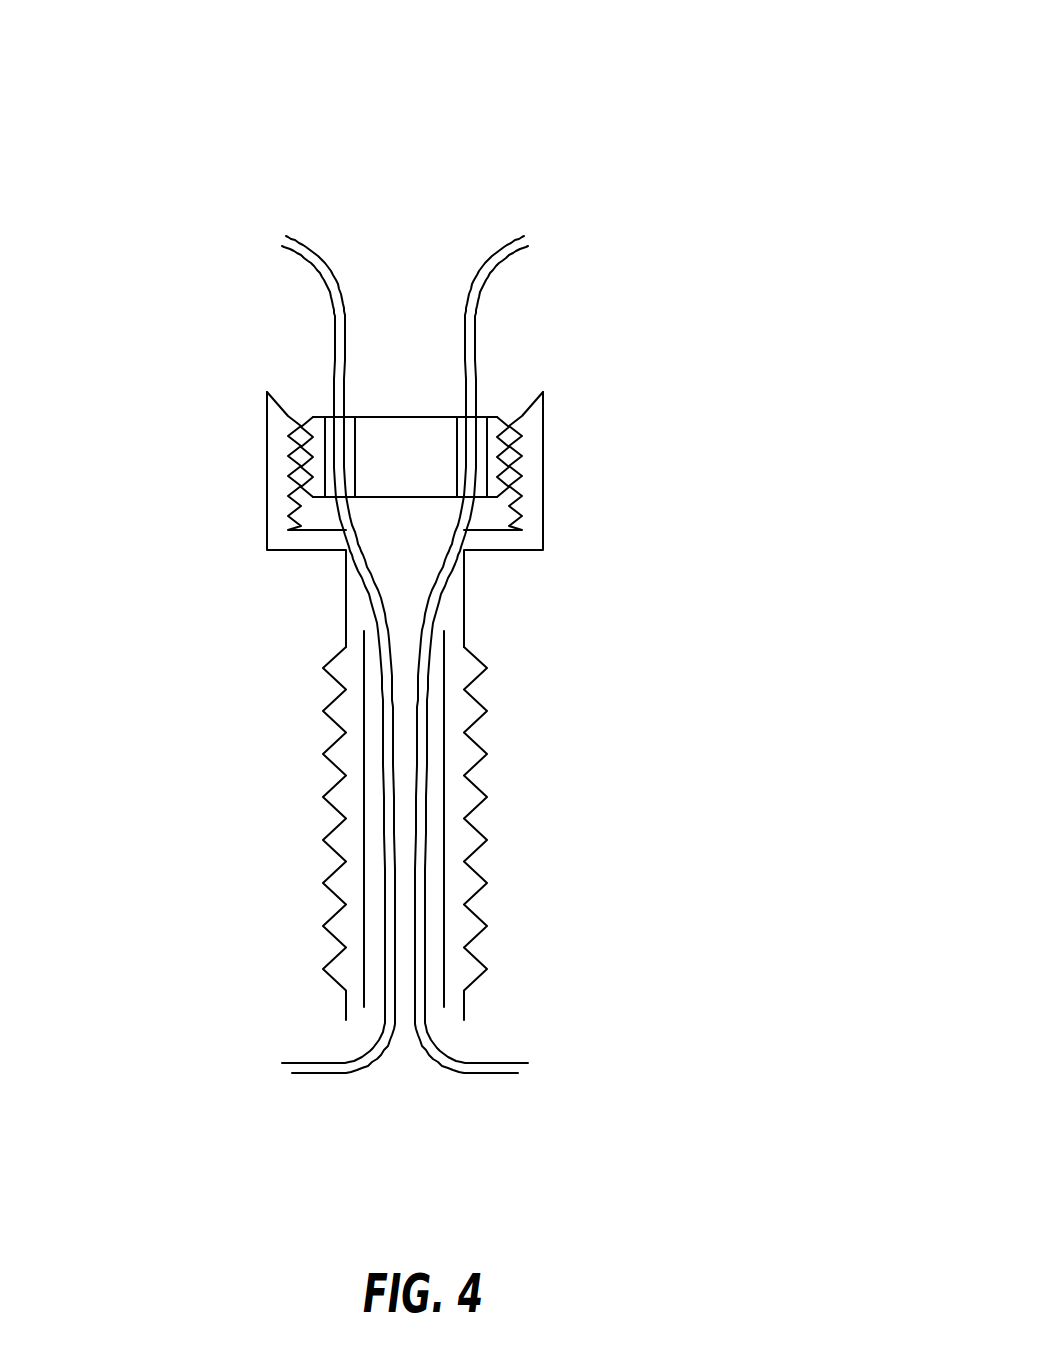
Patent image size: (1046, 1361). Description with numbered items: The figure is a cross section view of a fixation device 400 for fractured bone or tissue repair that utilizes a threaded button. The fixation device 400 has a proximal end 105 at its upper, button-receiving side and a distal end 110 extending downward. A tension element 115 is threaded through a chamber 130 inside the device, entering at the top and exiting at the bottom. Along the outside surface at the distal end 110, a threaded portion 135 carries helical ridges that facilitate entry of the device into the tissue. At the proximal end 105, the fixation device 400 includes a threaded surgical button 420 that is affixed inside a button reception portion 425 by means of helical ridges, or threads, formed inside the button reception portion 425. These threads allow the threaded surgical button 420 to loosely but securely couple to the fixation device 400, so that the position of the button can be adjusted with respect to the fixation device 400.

The fixation device 400 is at (461, 537).
The proximal end 105 is at (414, 460).
The distal end 110 is at (361, 773).
The tension element 115 is at (324, 601).
The chamber 130 is at (494, 819).
The threaded portion 135 is at (494, 833).
The threaded surgical button 420 is at (531, 409).
The button reception portion 425 is at (481, 467).